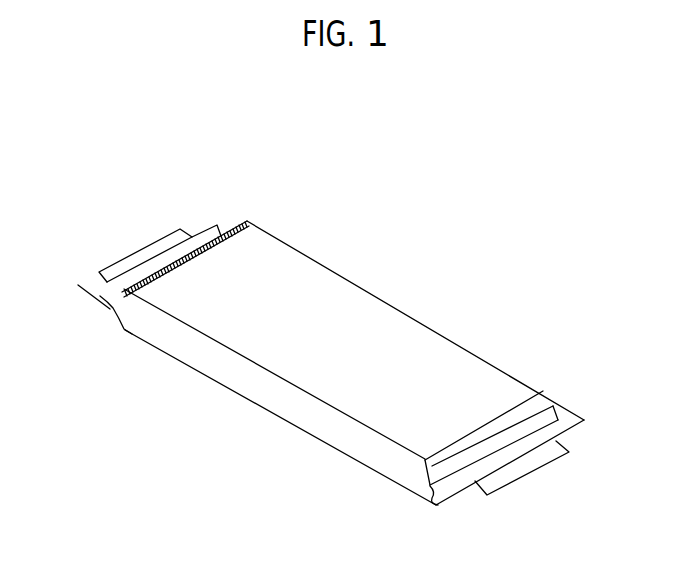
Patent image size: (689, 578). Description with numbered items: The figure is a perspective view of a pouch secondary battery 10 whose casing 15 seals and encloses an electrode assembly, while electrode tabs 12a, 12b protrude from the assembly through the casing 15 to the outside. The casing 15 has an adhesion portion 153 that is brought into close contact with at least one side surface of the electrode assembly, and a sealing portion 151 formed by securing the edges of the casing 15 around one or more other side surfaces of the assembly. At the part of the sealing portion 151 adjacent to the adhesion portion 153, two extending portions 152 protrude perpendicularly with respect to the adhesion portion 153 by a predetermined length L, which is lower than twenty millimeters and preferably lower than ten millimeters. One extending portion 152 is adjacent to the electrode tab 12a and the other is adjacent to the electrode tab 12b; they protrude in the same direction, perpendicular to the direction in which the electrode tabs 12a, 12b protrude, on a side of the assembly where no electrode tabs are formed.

The pouch secondary battery 10 is at (62, 138).
The electrode tab 12a is at (142, 245).
The electrode tab 12b is at (532, 474).
The casing 15 is at (410, 296).
The sealing portion 151 is at (577, 412).
The extending portion 152 is at (93, 298).
The adhesion portion 153 is at (271, 420).
The predetermined length L is at (84, 283).